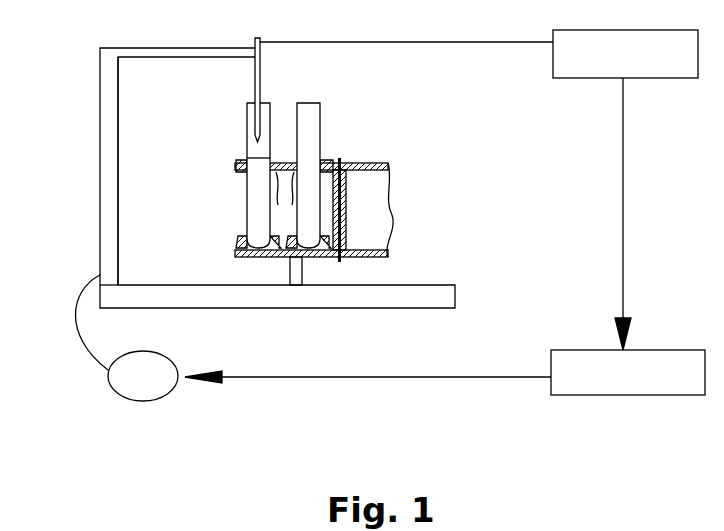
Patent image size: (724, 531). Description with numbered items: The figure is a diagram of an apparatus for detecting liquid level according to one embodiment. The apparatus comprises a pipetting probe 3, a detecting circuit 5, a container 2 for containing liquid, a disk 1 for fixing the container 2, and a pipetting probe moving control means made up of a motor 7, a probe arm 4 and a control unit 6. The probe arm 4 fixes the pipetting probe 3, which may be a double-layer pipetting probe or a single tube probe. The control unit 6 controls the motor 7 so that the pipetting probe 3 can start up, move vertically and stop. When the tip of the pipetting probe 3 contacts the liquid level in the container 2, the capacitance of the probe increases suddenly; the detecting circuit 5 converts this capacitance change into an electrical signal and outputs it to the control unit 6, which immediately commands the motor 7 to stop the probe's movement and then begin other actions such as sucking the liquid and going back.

The disk 1 is at (237, 168).
The container 2 is at (245, 130).
The pipetting probe 3 is at (253, 63).
The probe arm 4 is at (167, 57).
The detecting circuit 5 is at (647, 78).
The control unit 6 is at (660, 350).
The motor 7 is at (108, 385).